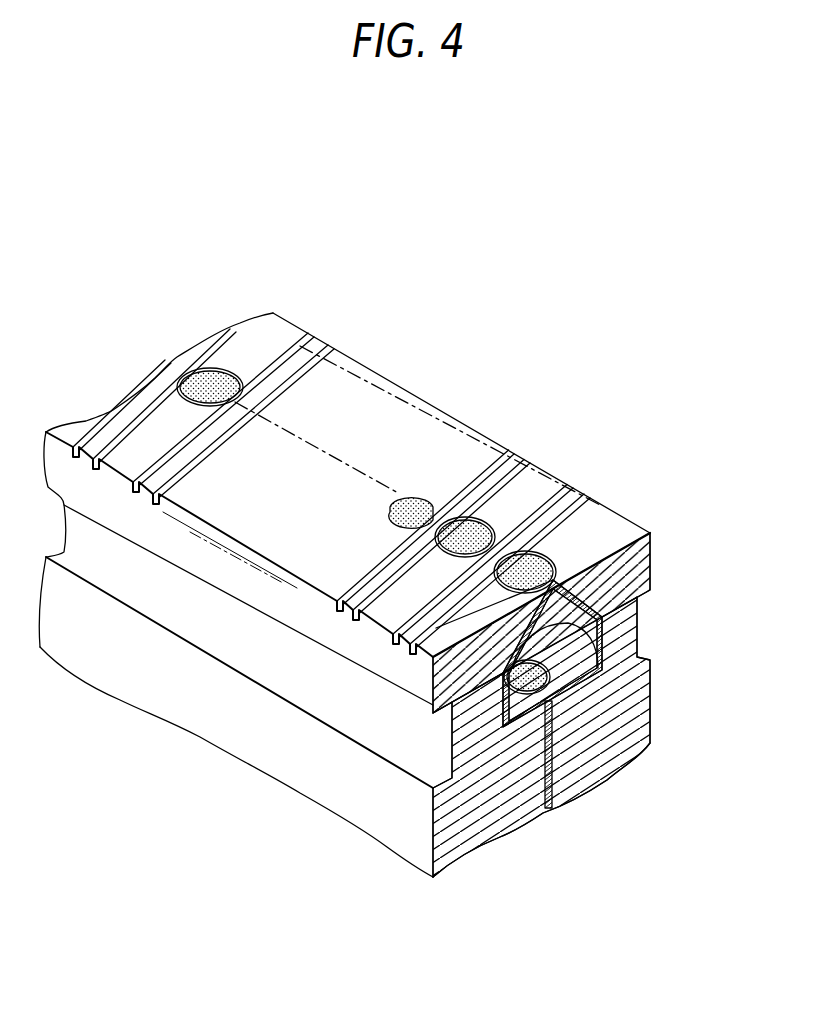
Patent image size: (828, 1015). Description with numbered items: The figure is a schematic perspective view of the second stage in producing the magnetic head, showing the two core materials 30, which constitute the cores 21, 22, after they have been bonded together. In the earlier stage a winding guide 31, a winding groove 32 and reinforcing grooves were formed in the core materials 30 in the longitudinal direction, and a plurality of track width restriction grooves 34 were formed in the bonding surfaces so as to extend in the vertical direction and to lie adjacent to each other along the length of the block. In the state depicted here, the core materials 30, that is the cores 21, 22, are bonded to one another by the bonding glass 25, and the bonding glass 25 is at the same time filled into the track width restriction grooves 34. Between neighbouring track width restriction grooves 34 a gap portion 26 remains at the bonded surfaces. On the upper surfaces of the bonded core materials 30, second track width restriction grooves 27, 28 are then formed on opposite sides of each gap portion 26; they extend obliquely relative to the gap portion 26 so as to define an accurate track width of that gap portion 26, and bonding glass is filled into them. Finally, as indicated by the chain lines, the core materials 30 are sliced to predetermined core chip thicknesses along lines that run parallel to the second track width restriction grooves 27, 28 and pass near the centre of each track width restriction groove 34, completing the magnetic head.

The core materials 30 is at (394, 595).
The core 21 is at (240, 743).
The core 22 is at (615, 530).
The track width restriction grooves 34 is at (470, 527).
The second track width restriction groove 27 is at (312, 330).
The second track width restriction groove 28 is at (338, 346).
The gap portion 26 is at (447, 513).
The bonding glass 25 is at (565, 608).
The winding guide 31 is at (540, 718).
The winding groove 32 is at (583, 650).